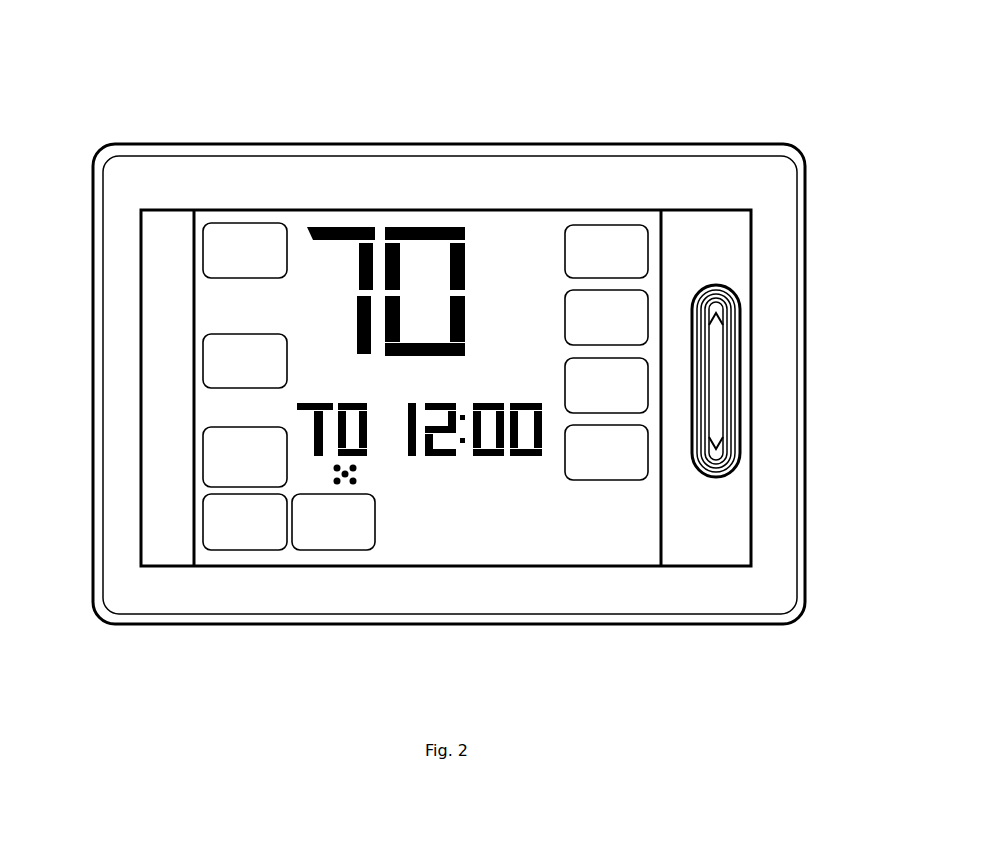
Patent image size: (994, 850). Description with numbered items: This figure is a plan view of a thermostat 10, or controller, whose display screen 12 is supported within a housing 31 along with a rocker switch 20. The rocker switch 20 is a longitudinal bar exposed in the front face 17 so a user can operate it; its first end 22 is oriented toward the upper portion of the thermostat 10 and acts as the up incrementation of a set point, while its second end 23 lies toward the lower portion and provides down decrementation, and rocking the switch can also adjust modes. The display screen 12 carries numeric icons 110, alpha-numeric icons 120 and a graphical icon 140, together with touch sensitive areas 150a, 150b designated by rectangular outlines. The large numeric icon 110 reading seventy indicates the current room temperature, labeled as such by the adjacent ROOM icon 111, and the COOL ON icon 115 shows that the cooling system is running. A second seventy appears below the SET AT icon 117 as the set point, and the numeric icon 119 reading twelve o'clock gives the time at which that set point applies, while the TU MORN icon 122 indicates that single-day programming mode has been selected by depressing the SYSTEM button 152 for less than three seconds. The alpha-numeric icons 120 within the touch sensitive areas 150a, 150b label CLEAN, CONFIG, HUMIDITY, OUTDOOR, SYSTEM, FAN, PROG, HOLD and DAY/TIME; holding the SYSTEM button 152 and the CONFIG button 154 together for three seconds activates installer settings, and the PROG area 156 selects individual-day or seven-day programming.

The thermostat 10 is at (288, 138).
The display screen 12 is at (536, 546).
The front face 17 is at (715, 490).
The rocker switch 20 is at (720, 390).
The first end 22 is at (733, 323).
The second end 23 is at (723, 445).
The housing 31 is at (722, 597).
The numeric icons 110 is at (343, 222).
The room indicator 111 is at (477, 227).
The COOL ON icon 115 is at (497, 305).
The SET AT icon 117 is at (293, 393).
The 12:00 numeric icon 119 is at (432, 460).
The alpha-numeric icons 120 is at (613, 233).
The TU MORN icon 122 is at (468, 372).
The graphical icon 140 is at (360, 467).
The touch sensitive area 150a is at (582, 223).
The touch sensitive area 150b is at (228, 222).
The SYSTEM button 152 is at (212, 268).
The CONFIG button 154 is at (633, 300).
The PROG touch sensitive area 156 is at (213, 460).